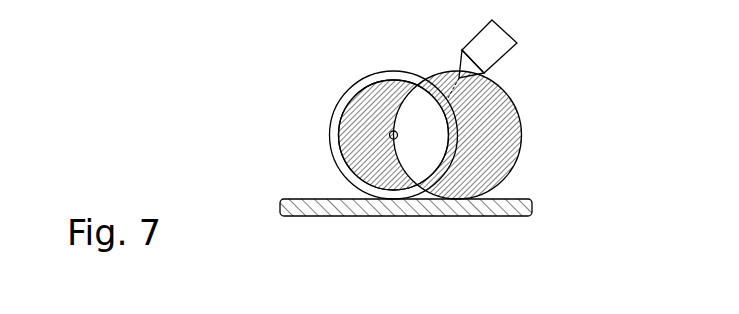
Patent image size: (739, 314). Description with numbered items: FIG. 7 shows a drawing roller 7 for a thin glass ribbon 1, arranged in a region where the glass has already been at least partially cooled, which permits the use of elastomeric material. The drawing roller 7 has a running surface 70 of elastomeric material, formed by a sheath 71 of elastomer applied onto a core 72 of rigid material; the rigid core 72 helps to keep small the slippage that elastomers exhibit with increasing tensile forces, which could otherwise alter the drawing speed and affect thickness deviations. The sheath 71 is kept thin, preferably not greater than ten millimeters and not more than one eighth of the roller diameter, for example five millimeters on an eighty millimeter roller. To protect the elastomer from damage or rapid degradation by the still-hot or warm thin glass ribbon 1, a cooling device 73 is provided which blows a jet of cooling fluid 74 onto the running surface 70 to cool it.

The thin glass ribbon 1 is at (473, 217).
The drawing roller 7 is at (473, 112).
The running surface 70 is at (345, 82).
The sheath 71 is at (458, 133).
The core 72 is at (360, 132).
The cooling device 73 is at (508, 55).
The jet of cooling fluid 74 is at (453, 75).